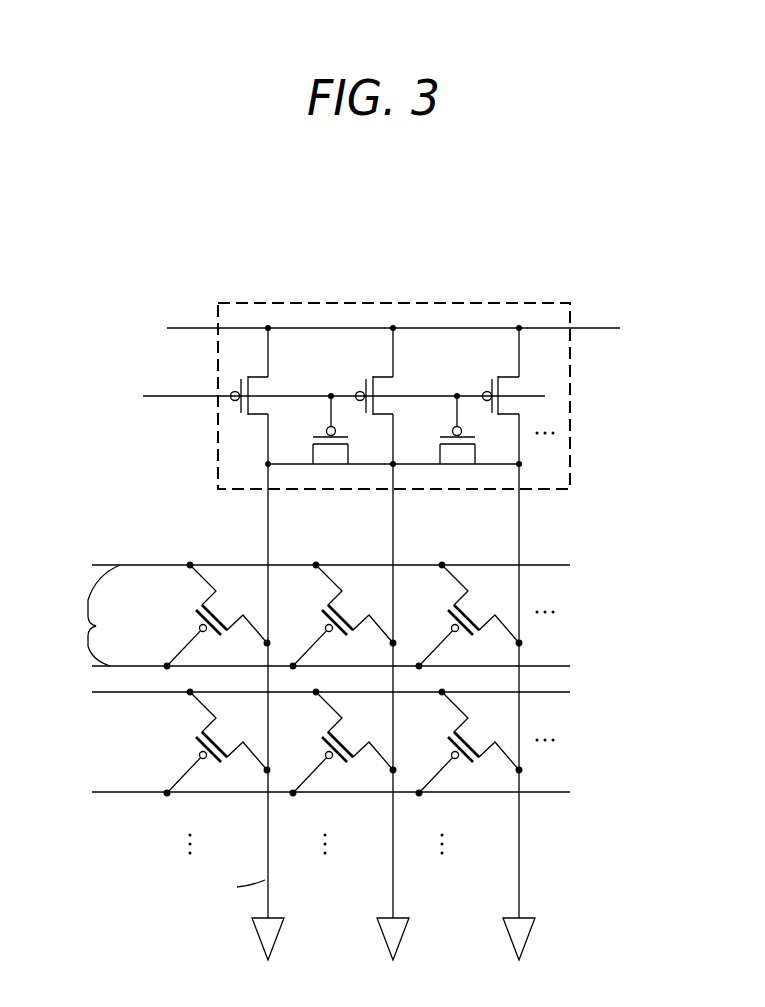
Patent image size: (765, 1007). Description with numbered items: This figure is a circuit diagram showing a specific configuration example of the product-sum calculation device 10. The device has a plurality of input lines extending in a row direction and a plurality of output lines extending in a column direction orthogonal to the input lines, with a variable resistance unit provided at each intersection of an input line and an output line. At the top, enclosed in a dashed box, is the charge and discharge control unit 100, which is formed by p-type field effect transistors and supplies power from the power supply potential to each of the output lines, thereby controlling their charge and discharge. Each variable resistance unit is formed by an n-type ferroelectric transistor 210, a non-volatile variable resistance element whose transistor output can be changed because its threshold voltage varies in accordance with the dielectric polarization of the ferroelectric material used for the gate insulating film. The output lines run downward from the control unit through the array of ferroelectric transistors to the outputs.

The product-sum calculation device 10 is at (523, 231).
The charge and discharge control unit 100 is at (450, 302).
The n-type ferroelectric transistor 210 is at (200, 618).